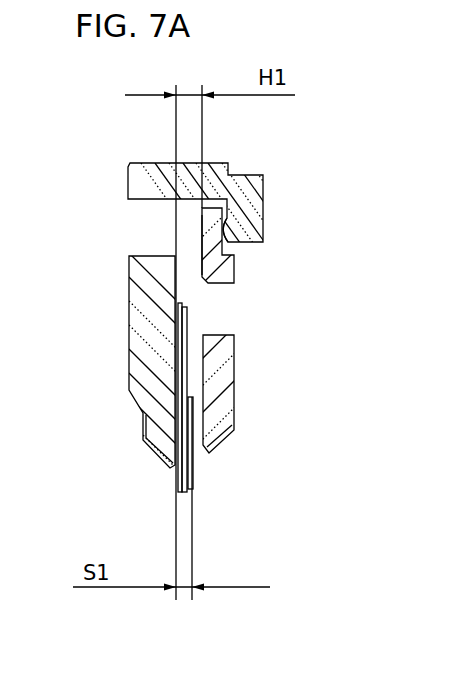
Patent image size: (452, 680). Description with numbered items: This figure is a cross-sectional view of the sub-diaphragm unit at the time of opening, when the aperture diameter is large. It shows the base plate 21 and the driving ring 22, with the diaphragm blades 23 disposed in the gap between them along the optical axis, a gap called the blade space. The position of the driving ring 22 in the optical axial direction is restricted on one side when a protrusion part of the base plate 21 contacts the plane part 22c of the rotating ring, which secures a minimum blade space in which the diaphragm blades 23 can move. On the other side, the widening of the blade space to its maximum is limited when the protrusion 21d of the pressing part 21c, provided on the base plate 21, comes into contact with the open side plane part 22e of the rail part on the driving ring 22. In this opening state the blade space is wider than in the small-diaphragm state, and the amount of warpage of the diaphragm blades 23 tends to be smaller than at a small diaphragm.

The base plate 21 is at (129, 300).
The pressing part 21c is at (250, 200).
The protrusion 21d is at (225, 232).
The driving ring 22 is at (234, 382).
The plane part 22c is at (202, 235).
The open side plane part 22e is at (225, 248).
The diaphragm blades 23 is at (193, 485).